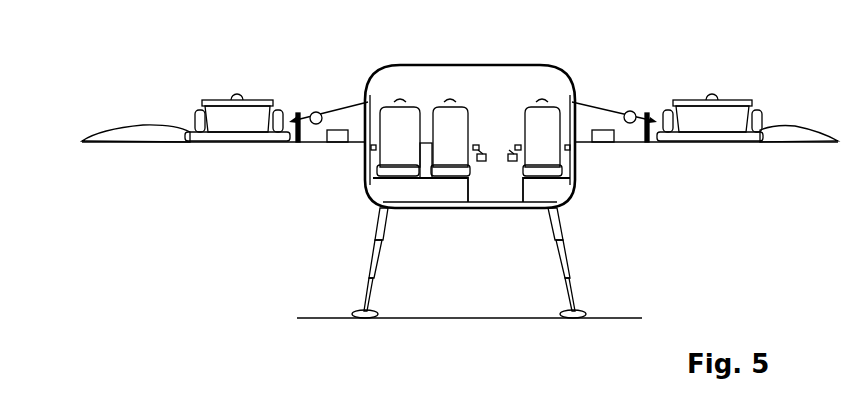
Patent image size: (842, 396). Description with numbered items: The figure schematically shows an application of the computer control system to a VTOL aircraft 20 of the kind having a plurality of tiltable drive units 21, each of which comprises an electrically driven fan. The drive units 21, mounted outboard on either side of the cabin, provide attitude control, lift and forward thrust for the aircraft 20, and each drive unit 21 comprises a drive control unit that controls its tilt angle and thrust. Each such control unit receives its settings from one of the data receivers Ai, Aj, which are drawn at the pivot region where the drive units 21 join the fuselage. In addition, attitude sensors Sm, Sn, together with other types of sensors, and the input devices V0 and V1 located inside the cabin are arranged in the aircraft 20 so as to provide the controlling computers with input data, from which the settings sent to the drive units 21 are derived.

The VTOL aircraft 20 is at (253, 220).
The tiltable drive unit 21 is at (469, 92).
The data receiver Ai is at (299, 93).
The data receiver Aj is at (612, 93).
The attitude sensor Sm is at (315, 160).
The attitude sensor Sn is at (622, 160).
The input device V0 is at (456, 201).
The input device V1 is at (487, 223).